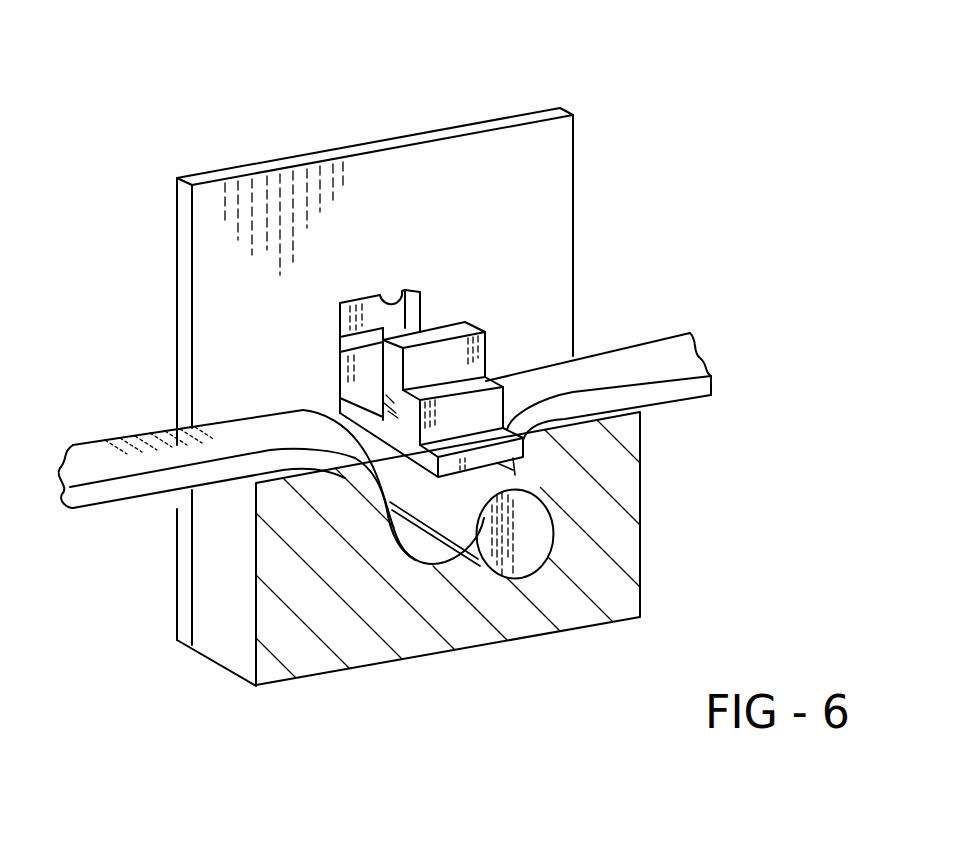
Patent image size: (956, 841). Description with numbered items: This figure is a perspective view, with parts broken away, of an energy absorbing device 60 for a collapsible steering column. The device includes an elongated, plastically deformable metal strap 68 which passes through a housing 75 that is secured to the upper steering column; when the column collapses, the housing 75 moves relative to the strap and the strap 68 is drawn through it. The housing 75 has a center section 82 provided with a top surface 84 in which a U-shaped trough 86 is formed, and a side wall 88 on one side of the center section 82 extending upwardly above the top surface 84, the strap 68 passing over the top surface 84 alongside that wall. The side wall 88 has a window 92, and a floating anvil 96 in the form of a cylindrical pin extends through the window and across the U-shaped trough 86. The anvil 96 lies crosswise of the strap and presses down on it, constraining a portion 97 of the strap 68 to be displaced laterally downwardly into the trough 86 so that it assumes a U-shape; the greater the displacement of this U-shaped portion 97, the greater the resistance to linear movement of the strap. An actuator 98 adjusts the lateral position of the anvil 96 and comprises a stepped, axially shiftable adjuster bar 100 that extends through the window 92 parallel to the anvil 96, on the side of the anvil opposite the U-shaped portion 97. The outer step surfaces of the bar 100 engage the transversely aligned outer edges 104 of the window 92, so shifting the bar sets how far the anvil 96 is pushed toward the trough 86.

The energy absorbing device 60 is at (690, 232).
The strap 68 is at (684, 354).
The housing 75 is at (157, 292).
The center section 82 is at (212, 632).
The top surface 84 is at (547, 417).
The U-shaped trough 86 is at (445, 556).
The side wall 88 is at (430, 153).
The window 92 is at (423, 315).
The floating anvil 96 is at (545, 527).
The U-shaped portion 97 is at (412, 540).
The actuator 98 is at (328, 387).
The adjuster bar 100 is at (500, 333).
The outer edges 104 is at (381, 290).